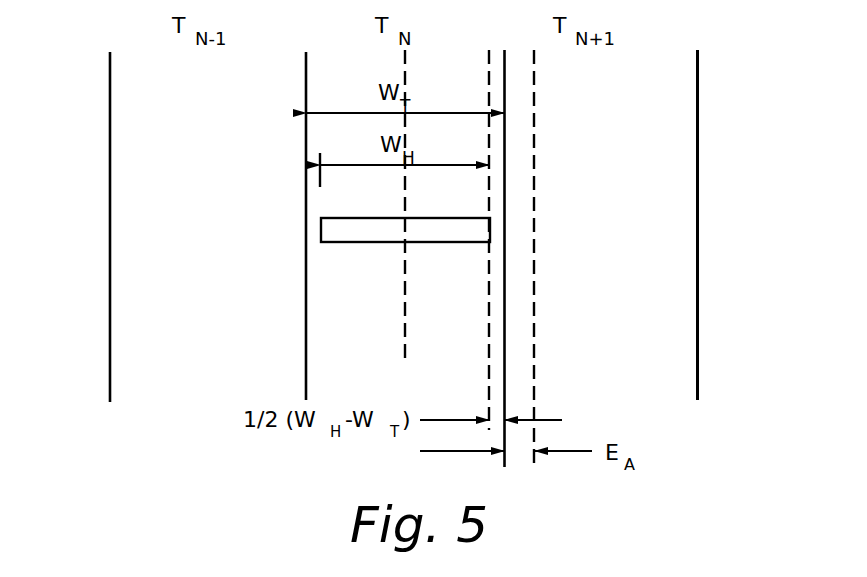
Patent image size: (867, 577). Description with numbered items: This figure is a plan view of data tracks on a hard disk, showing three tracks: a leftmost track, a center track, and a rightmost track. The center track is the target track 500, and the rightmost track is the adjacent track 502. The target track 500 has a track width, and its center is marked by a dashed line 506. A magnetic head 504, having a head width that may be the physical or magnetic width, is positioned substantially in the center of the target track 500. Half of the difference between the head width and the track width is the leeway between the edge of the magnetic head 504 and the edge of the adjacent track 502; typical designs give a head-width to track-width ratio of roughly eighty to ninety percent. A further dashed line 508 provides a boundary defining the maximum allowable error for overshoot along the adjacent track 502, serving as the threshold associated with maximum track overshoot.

The target track 500 is at (343, 280).
The adjacent track 502 is at (627, 287).
The magnetic head 504 is at (321, 232).
The dashed line 506 is at (404, 362).
The dashed line 508 is at (534, 251).